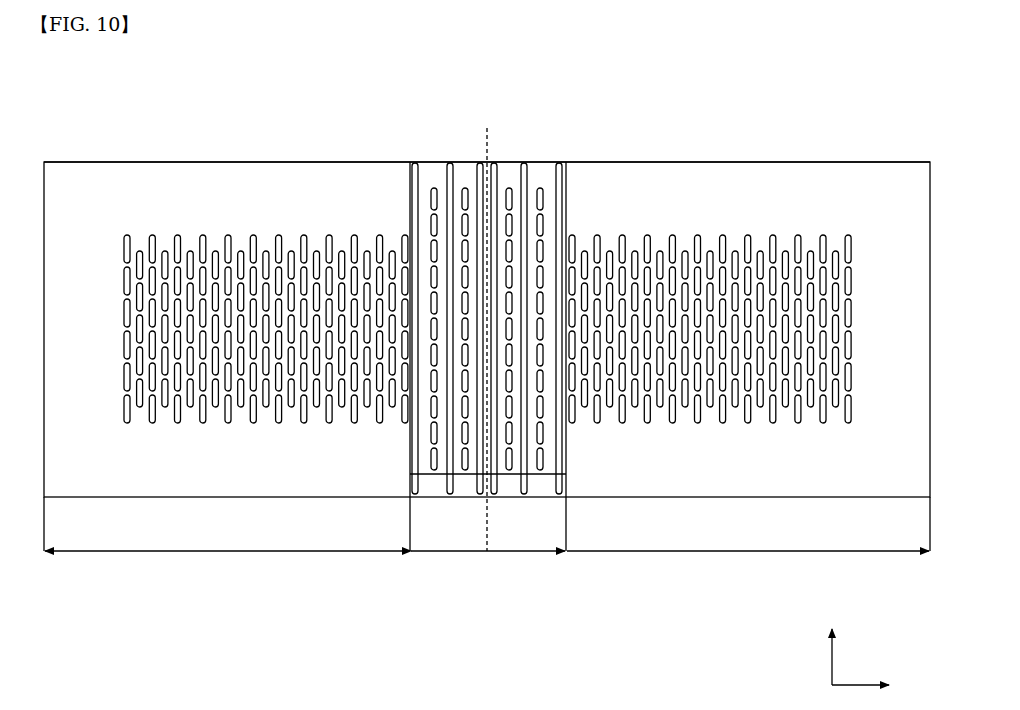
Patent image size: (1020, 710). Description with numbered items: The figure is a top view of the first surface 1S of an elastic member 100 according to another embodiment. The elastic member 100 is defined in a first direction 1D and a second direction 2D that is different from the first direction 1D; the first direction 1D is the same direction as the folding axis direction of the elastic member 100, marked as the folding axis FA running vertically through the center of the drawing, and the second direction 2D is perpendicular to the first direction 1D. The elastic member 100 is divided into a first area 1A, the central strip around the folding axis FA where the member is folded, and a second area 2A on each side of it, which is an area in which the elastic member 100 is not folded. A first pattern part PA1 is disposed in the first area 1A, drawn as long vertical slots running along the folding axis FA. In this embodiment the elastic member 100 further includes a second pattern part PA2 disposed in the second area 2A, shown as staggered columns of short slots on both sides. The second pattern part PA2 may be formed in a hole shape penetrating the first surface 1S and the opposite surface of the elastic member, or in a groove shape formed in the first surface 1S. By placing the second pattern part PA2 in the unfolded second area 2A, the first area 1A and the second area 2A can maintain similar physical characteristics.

The elastic member 100 is at (893, 168).
The first surface 1S is at (840, 180).
The first pattern part PA1 is at (518, 188).
The second pattern part PA2 is at (247, 235).
The folding axis FA is at (469, 331).
The first area 1A is at (488, 367).
The second area 2A is at (487, 535).
The first direction 1D is at (834, 643).
The second direction 2D is at (875, 686).